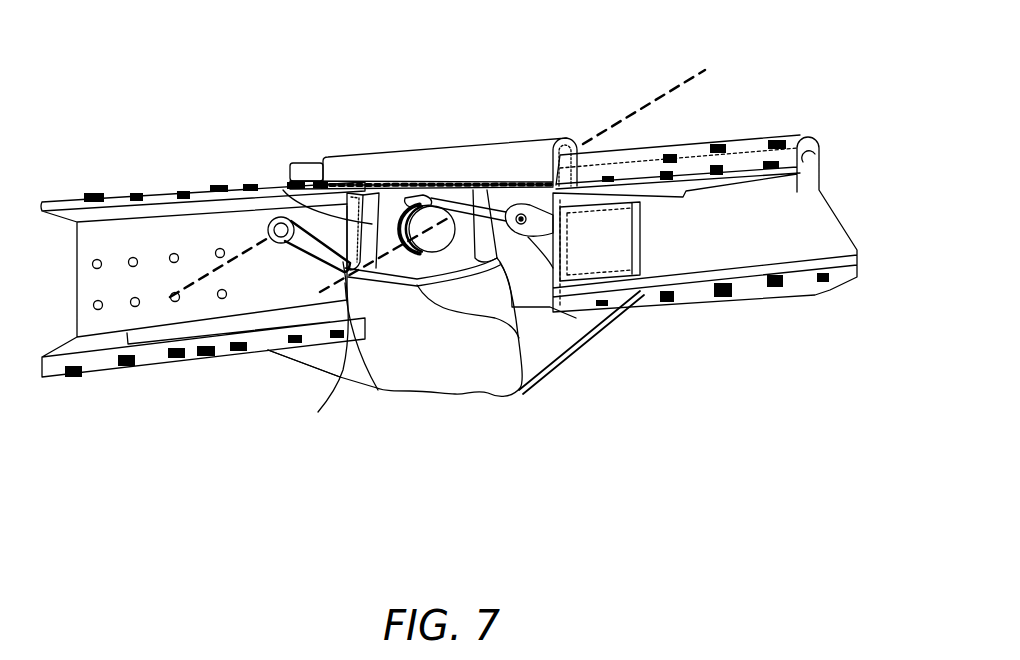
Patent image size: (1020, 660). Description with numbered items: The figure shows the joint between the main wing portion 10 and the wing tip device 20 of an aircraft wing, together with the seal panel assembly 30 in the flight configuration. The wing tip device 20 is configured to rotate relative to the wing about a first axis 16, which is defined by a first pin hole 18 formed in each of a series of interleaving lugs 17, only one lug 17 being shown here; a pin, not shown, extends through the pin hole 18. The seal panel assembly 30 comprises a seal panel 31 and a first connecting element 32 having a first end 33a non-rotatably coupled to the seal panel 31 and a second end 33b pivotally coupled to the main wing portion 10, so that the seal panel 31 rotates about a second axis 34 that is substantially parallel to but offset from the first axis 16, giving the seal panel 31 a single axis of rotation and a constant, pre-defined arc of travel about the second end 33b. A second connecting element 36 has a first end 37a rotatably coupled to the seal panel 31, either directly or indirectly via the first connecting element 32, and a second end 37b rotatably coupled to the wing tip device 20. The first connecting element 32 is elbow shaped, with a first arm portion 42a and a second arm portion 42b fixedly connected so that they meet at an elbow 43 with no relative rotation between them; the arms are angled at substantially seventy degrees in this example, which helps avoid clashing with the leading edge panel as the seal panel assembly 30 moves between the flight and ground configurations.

The main wing portion 10 is at (145, 220).
The wing tip device 20 is at (708, 147).
The seal panel assembly 30 is at (236, 92).
The seal panel 31 is at (470, 157).
The first connecting element 32 is at (283, 258).
The first end 33a is at (383, 223).
The second end 33b is at (177, 300).
The second axis 34 is at (128, 378).
The second connecting element 36 is at (505, 318).
The first end 37a is at (418, 198).
The second end 37b is at (643, 300).
The first axis 16 is at (387, 264).
The lug 17 is at (405, 273).
The first pin hole 18 is at (472, 243).
The first arm portion 42a is at (308, 246).
The second arm portion 42b is at (283, 216).
The elbow 43 is at (325, 240).